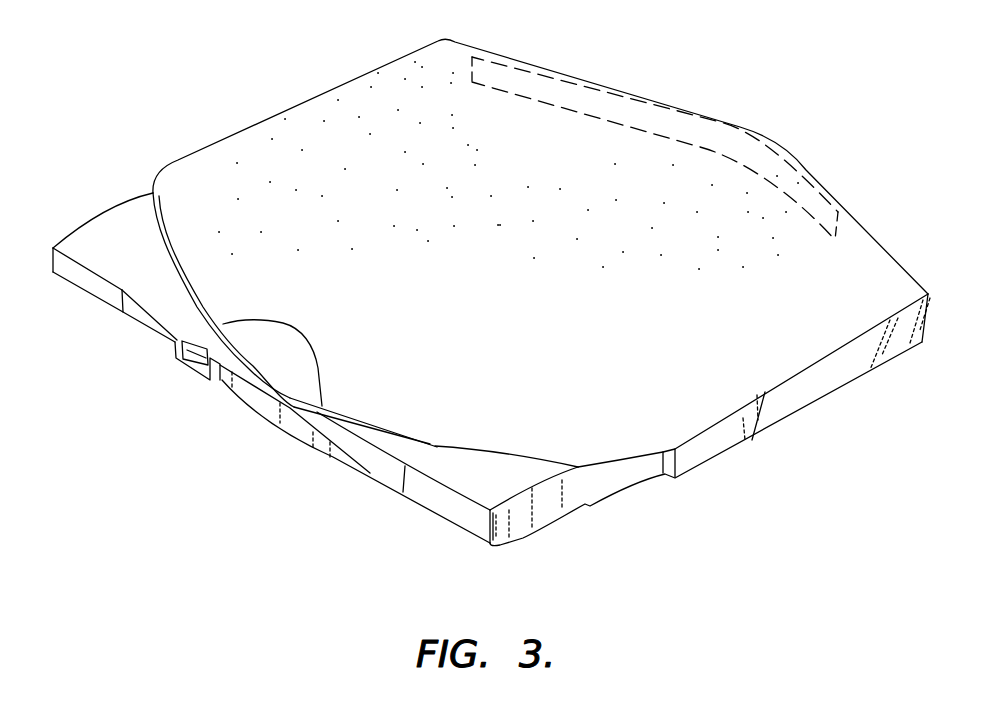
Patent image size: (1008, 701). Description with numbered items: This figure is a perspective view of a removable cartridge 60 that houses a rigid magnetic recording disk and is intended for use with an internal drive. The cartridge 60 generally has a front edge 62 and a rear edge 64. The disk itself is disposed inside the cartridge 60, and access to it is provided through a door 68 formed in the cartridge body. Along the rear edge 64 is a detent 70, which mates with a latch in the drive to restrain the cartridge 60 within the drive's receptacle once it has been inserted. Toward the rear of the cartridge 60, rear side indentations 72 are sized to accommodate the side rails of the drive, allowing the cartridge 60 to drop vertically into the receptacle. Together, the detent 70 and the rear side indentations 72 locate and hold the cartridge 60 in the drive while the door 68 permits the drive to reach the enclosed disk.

The cartridge 60 is at (178, 58).
The front edge 62 is at (740, 128).
The rear edge 64 is at (375, 474).
The door 68 is at (552, 89).
The detent 70 is at (193, 358).
The rear side indentations 72 is at (130, 193).